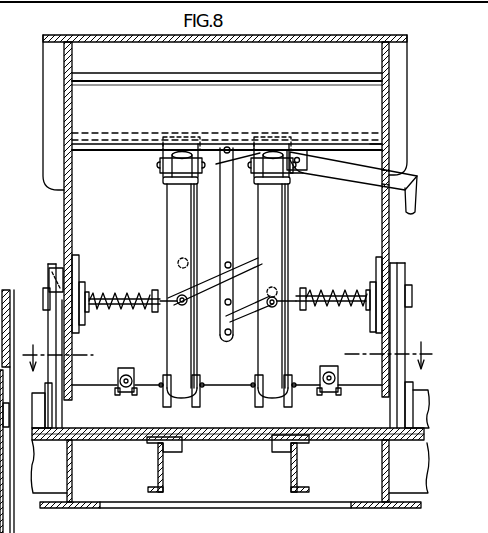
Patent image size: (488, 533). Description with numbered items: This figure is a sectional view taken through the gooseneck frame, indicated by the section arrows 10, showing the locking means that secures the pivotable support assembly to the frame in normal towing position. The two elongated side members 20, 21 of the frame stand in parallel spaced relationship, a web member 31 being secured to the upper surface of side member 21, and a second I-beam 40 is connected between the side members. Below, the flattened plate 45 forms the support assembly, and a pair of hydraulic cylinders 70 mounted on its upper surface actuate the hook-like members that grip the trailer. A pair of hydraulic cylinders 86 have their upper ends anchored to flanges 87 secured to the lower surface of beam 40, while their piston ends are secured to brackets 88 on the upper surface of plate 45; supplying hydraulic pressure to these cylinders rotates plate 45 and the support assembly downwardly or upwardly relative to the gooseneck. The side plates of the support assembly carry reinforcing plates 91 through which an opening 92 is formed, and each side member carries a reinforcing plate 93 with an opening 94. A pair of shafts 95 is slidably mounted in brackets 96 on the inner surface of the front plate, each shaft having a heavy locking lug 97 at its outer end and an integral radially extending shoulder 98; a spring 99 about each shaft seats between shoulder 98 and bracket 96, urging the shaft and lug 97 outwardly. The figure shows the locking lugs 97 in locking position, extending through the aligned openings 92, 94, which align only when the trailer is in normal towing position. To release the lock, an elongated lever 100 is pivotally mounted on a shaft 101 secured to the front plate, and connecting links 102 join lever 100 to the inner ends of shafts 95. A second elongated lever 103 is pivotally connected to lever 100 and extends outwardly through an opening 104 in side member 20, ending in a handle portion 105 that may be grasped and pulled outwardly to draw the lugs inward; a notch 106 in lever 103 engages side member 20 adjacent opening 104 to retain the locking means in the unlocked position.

The section line 10 is at (227, 344).
The side member 20 is at (382, 203).
The side member 21 is at (33, 3).
The web member 31 is at (311, 1).
The second I-beam 40 is at (121, 78).
The flattened plate 45 is at (230, 445).
The hydraulic cylinder 70 is at (121, 389).
The hydraulic cylinder 86 is at (176, 198).
The flange 87 is at (160, 160).
The bracket 88 is at (194, 379).
The reinforcing plate 91 is at (5, 289).
The opening 92 is at (55, 267).
The reinforcing plate 93 is at (78, 261).
The opening 94 is at (93, 273).
The shaft 95 is at (136, 291).
The bracket 96 is at (154, 290).
The locking lug 97 is at (44, 296).
The shoulder 98 is at (86, 310).
The spring 99 is at (123, 309).
The elongated lever 100 is at (223, 173).
The shaft 101 is at (226, 304).
The connecting link 102 is at (257, 272).
The second elongated lever 103 is at (352, 172).
The opening 104 is at (377, 153).
The handle portion 105 is at (411, 213).
The notch 106 is at (306, 165).